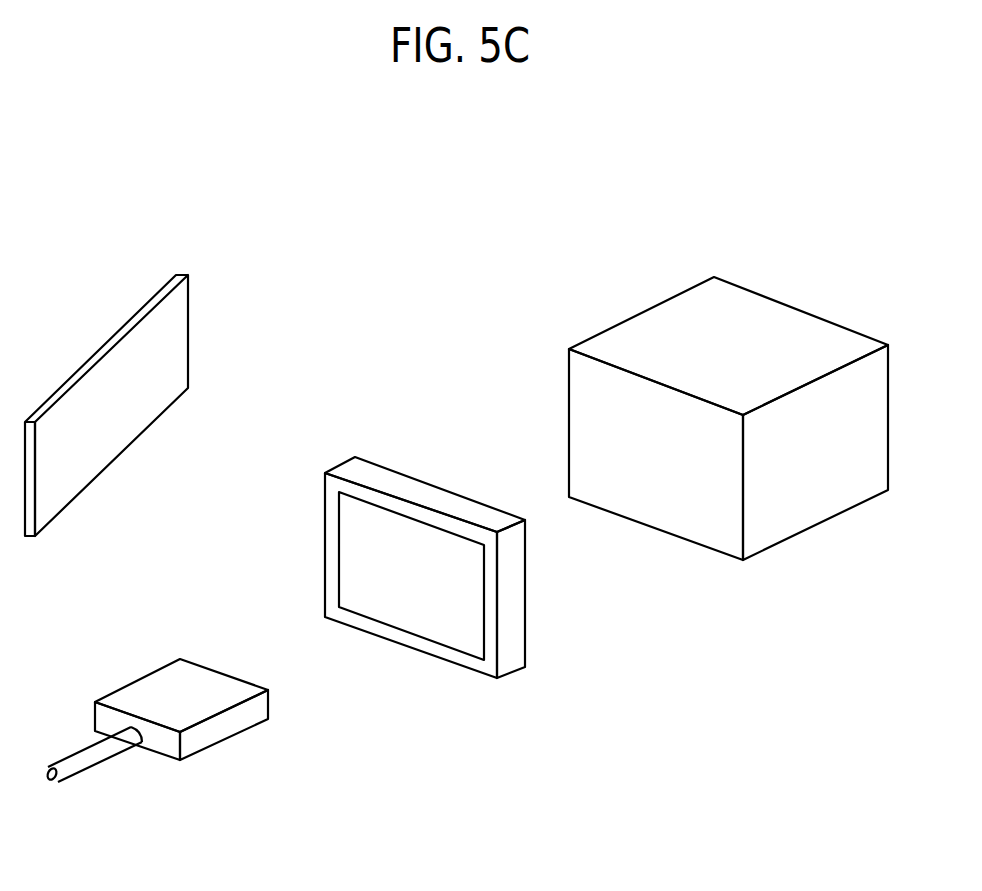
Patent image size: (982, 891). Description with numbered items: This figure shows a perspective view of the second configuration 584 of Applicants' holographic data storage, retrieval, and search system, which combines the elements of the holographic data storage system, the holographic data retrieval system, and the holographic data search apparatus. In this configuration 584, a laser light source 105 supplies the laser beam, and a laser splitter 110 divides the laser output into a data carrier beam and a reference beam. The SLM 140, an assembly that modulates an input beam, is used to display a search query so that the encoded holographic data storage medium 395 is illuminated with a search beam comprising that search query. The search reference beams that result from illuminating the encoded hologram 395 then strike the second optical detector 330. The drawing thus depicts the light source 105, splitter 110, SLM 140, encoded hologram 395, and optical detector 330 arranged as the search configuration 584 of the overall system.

The laser light source 105 is at (82, 760).
The laser splitter 110 is at (217, 729).
The spatial light modulator assembly 140 is at (513, 657).
The second optical detector 330 is at (176, 353).
The encoded holographic data storage medium 395 is at (820, 508).
The configuration 584 is at (440, 763).